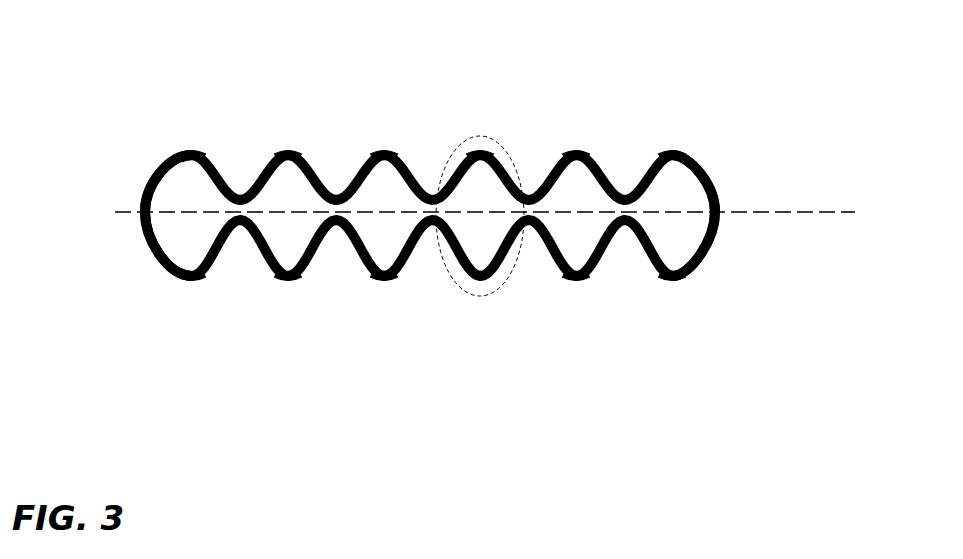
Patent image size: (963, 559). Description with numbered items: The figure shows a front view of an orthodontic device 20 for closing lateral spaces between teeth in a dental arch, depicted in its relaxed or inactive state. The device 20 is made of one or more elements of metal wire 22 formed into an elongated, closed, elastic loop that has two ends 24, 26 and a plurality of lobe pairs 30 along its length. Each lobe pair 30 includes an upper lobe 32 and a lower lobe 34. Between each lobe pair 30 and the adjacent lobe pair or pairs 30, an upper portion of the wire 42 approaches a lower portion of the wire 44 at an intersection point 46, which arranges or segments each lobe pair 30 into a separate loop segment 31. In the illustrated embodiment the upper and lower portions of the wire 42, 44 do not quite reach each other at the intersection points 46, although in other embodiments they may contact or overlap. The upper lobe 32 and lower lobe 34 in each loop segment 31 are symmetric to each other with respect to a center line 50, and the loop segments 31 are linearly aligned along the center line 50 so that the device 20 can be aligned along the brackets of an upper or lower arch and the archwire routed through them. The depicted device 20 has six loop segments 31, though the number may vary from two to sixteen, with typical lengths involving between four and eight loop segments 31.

The orthodontic device 20 is at (99, 44).
The metal wire 22 is at (168, 275).
The first end 24 is at (128, 182).
The second end 26 is at (716, 215).
The lobe pair 30 is at (455, 173).
The loop segment 31 is at (482, 295).
The upper lobe 32 is at (192, 152).
The lower lobe 34 is at (205, 282).
The upper portion of the wire 42 is at (523, 210).
The lower portion of the wire 44 is at (527, 228).
The intersection point 46 is at (530, 200).
The center line 50 is at (837, 210).